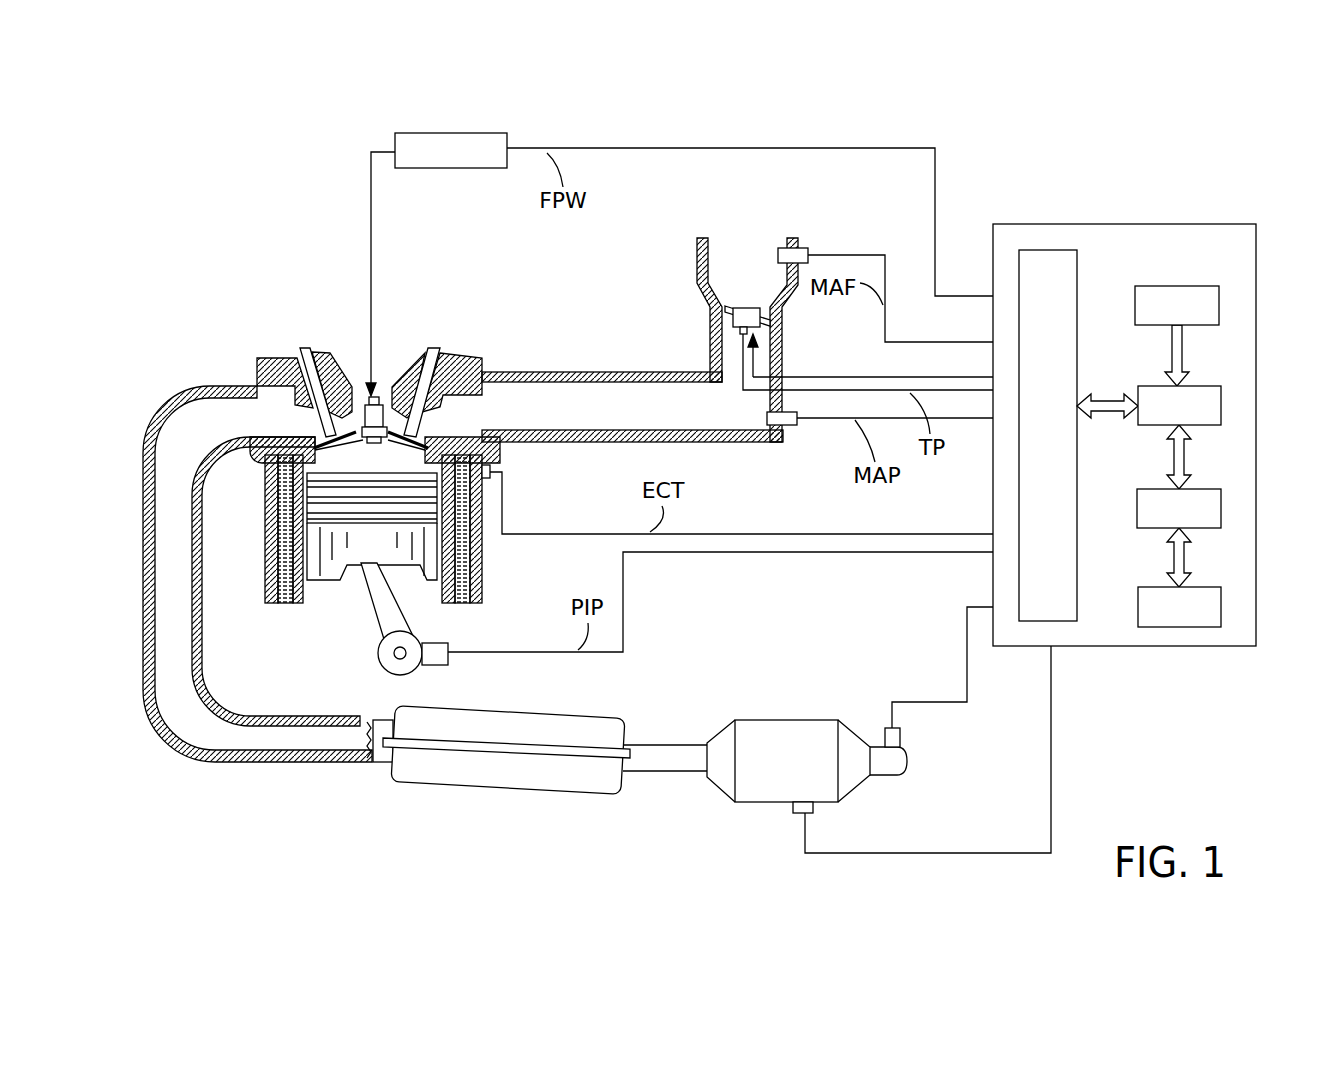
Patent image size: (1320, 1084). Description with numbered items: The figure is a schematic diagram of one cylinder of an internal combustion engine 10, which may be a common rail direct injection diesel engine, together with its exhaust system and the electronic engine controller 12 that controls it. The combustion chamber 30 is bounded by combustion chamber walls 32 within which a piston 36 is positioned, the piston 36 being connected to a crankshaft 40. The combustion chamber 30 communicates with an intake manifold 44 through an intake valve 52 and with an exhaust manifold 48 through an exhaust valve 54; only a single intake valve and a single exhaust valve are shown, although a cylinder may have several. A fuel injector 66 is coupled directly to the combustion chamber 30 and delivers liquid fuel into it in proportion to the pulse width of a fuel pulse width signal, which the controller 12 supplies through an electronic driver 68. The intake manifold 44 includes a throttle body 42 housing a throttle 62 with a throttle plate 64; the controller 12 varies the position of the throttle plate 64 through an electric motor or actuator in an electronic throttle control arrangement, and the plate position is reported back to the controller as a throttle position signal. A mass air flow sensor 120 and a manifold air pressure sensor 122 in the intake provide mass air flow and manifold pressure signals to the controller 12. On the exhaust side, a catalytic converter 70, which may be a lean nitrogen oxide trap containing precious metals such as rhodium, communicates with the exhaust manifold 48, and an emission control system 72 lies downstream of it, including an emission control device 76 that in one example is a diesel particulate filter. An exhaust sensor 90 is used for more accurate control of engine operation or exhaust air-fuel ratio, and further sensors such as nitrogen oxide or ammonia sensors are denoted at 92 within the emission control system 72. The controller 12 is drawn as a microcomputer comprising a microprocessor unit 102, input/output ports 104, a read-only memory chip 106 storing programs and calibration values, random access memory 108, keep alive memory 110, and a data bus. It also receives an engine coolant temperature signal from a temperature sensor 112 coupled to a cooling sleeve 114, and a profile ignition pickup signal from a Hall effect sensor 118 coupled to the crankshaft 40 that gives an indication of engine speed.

The internal combustion engine 10 is at (166, 332).
The electronic engine controller 12 is at (1136, 222).
The combustion chamber 30 is at (320, 465).
The combustion chamber walls 32 is at (293, 603).
The piston 36 is at (359, 558).
The crankshaft 40 is at (380, 668).
The throttle body 42 is at (733, 282).
The intake manifold 44 is at (663, 422).
The exhaust manifold 48 is at (207, 431).
The intake valve 52 is at (428, 430).
The exhaust valve 54 is at (280, 345).
The throttle 62 is at (783, 320).
The throttle plate 64 is at (710, 317).
The fuel injector 66 is at (388, 380).
The electronic driver 68 is at (448, 170).
The catalytic converter 70 is at (507, 786).
The emission control system 72 is at (846, 657).
The emission control device 76 is at (787, 713).
The exhaust sensor 90 is at (798, 813).
The exhaust sensor 92 is at (903, 740).
The microprocessor unit 102 is at (1210, 383).
The input/output ports 104 is at (1069, 277).
The read-only memory chip 106 is at (1194, 285).
The random access memory 108 is at (1210, 488).
The keep alive memory 110 is at (1212, 586).
The temperature sensor 112 is at (490, 468).
The cooling sleeve 114 is at (473, 552).
The Hall effect sensor 118 is at (453, 647).
The mass air flow sensor 120 is at (803, 243).
The manifold air pressure sensor 122 is at (793, 430).